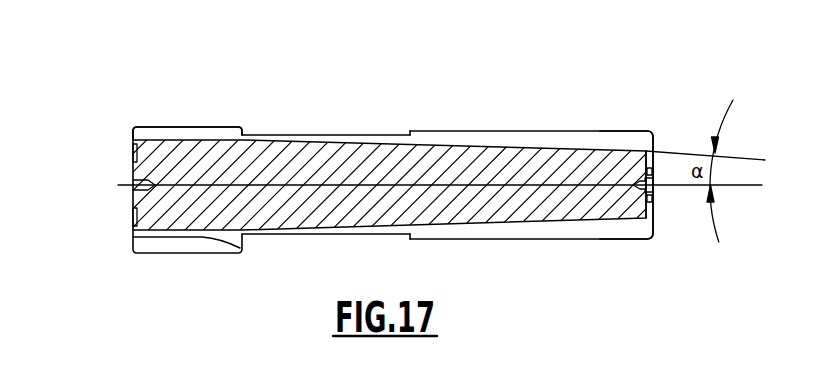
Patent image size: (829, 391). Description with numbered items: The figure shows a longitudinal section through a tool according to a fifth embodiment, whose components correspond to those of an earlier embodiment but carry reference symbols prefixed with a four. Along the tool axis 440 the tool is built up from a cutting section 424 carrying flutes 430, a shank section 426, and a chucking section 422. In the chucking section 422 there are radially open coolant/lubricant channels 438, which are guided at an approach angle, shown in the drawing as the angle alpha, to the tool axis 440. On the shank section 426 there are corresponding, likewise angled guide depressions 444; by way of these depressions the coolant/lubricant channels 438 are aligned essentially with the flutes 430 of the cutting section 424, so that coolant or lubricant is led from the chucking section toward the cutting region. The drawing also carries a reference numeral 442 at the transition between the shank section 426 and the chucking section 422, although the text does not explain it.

The chucking section 422 is at (529, 112).
The cutting section 424 is at (189, 106).
The shank section 426 is at (314, 116).
The flutes 430 is at (151, 134).
The coolant/lubricant channels 438 is at (606, 141).
The tool axis 440 is at (121, 190).
The shoulder 442 is at (407, 134).
The guide depressions 444 is at (351, 234).